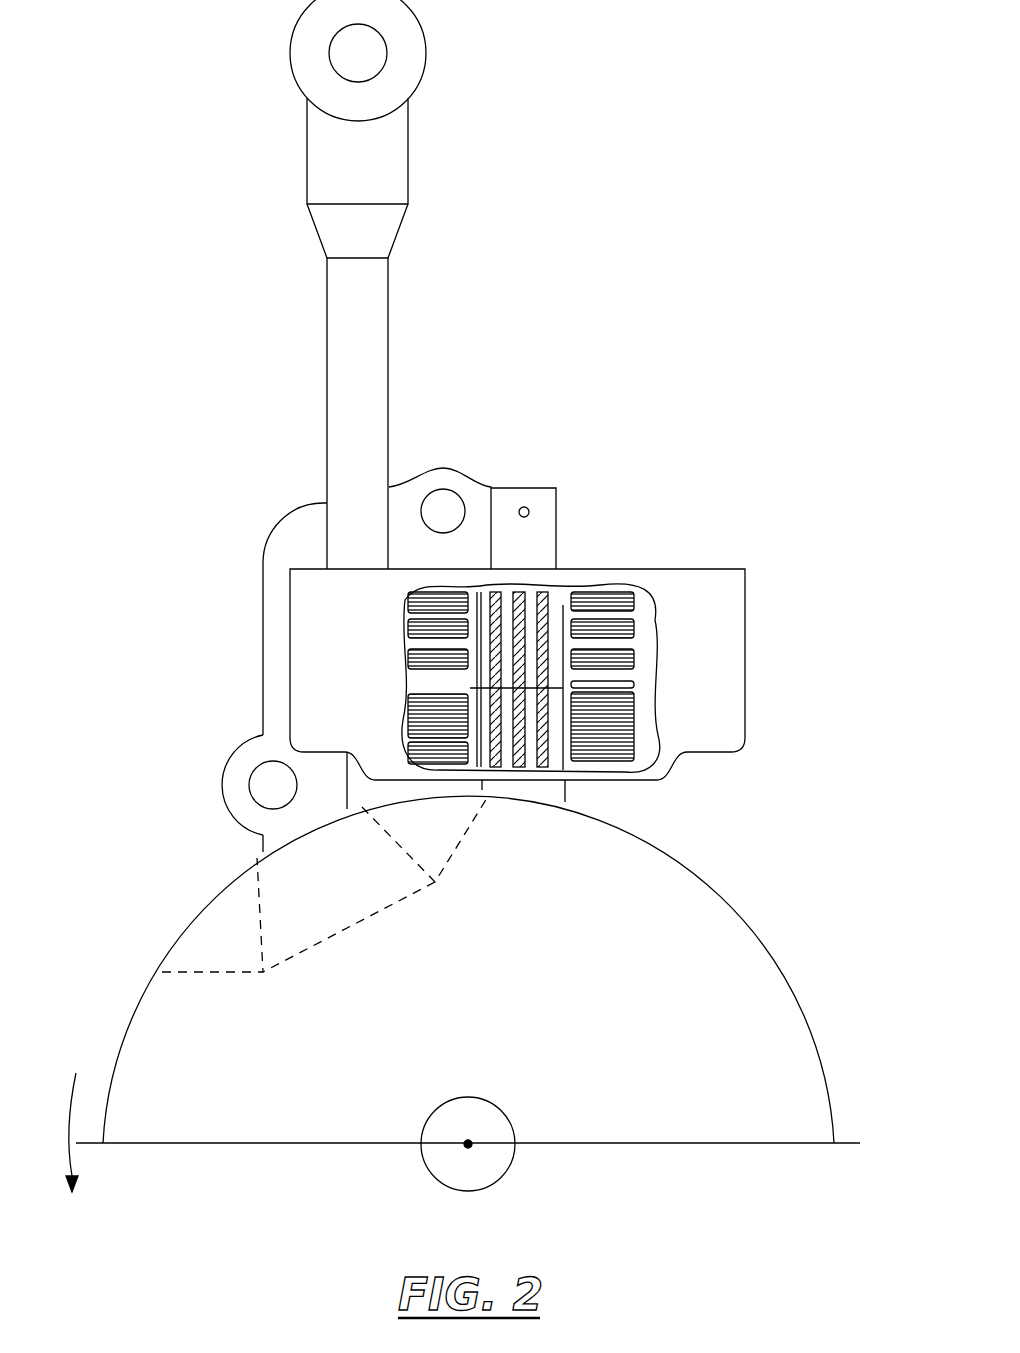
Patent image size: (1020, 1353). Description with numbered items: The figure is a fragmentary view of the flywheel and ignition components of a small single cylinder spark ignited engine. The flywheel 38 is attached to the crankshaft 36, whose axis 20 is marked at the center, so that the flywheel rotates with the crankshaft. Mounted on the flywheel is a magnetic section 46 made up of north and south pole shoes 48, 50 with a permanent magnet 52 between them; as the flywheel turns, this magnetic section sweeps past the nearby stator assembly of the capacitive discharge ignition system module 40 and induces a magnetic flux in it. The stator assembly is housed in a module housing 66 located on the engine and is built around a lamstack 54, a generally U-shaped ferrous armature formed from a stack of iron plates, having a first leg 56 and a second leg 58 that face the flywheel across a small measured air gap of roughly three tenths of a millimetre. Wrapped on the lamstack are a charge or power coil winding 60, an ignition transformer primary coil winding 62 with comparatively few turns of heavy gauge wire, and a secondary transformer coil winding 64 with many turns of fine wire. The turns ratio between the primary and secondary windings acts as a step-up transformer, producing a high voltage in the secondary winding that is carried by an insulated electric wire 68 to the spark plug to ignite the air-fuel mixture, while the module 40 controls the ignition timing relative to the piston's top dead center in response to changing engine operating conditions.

The axis of rotation 20 is at (470, 1138).
The crankshaft 36 is at (500, 1177).
The flywheel 38 is at (710, 1047).
The capacitive discharge ignition system module 40 is at (760, 531).
The magnetic section 46 is at (332, 912).
The north pole shoe 48 is at (459, 837).
The south pole shoe 50 is at (206, 972).
The permanent magnet 52 is at (307, 948).
The lamstack 54 is at (522, 483).
The first leg 56 is at (556, 541).
The second leg 58 is at (229, 805).
The charge or power coil winding 60 is at (565, 748).
The ignition transformer primary coil winding 62 is at (470, 688).
The secondary transformer coil winding 64 is at (406, 659).
The module housing 66 is at (308, 723).
The insulated electric wire 68 is at (314, 316).